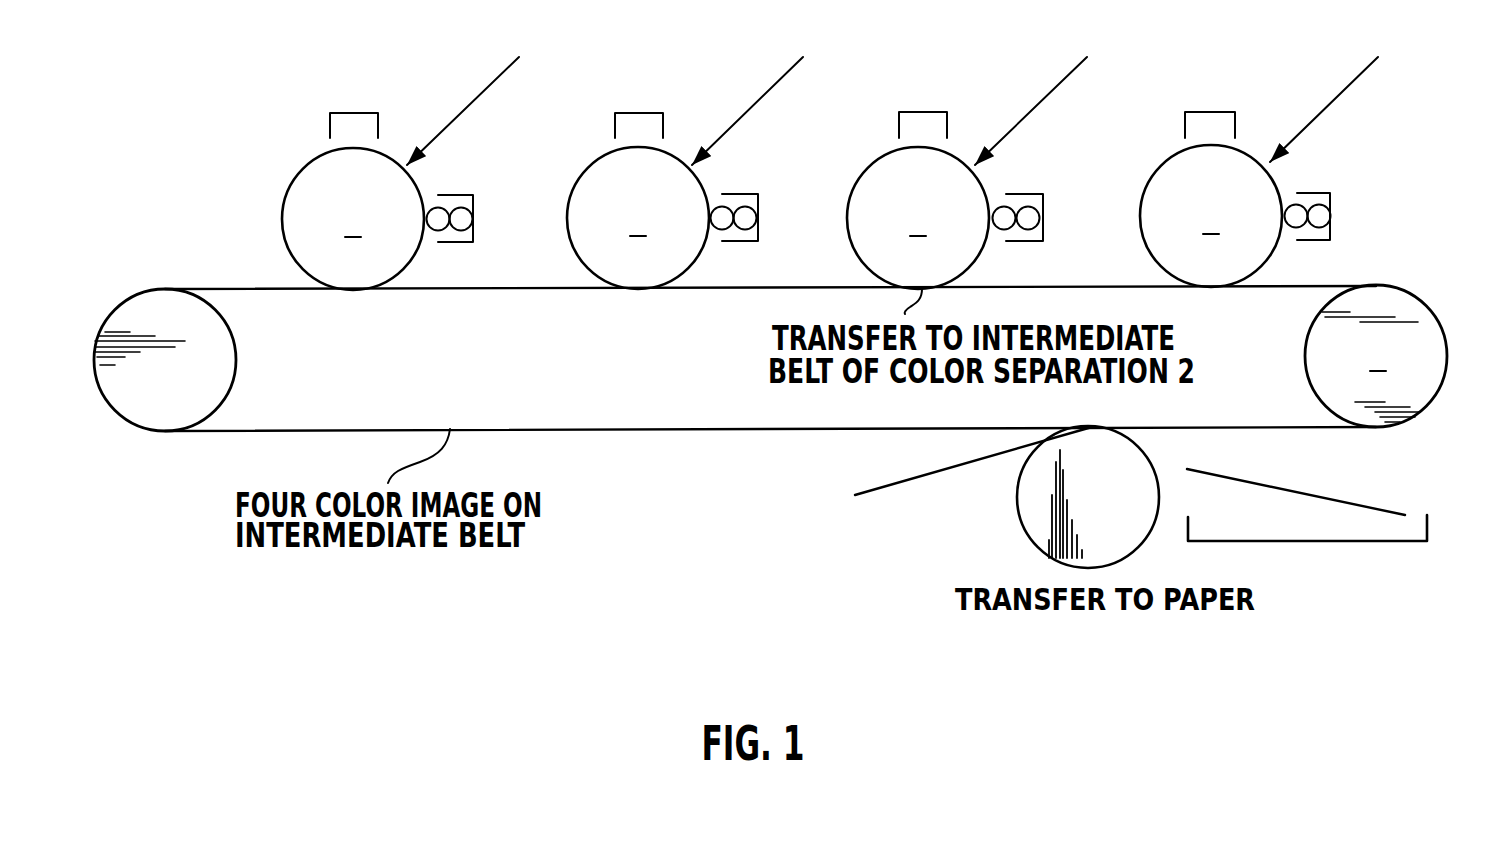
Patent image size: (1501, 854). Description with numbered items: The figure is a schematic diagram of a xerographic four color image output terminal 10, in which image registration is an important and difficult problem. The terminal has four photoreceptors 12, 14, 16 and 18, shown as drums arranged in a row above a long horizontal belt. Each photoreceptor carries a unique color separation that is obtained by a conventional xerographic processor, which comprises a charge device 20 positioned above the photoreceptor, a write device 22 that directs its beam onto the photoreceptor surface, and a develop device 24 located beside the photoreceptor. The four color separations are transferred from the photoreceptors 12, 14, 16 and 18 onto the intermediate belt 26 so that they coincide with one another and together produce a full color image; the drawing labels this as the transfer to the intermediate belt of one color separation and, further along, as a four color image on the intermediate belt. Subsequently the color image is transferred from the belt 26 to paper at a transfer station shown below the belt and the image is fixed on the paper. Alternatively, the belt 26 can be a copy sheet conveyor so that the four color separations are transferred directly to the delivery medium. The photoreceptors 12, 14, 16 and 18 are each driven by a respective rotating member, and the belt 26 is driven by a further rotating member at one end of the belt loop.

The color image output terminal 10 is at (226, 192).
The photoreceptor 12 is at (1270, 173).
The photoreceptor 14 is at (983, 183).
The photoreceptor 16 is at (700, 178).
The photoreceptor 18 is at (415, 183).
The charge device 20 is at (1210, 102).
The write device 22 is at (1340, 89).
The develop device 24 is at (1332, 215).
The intermediate belt 26 is at (482, 290).